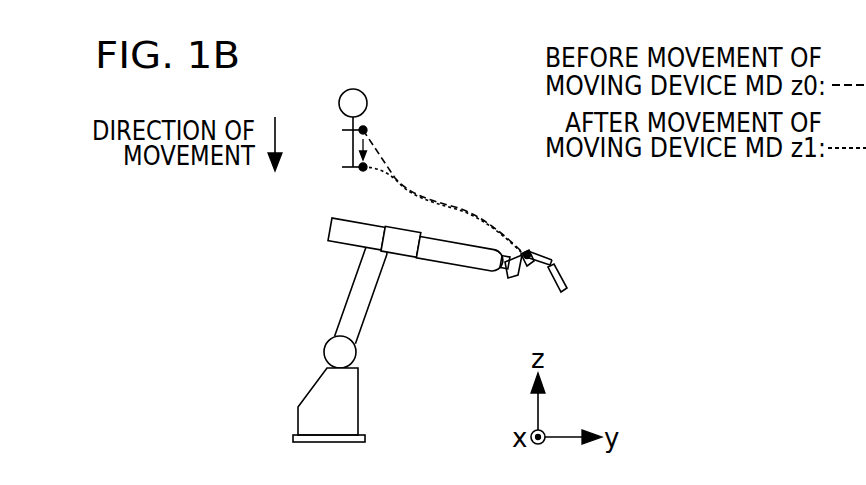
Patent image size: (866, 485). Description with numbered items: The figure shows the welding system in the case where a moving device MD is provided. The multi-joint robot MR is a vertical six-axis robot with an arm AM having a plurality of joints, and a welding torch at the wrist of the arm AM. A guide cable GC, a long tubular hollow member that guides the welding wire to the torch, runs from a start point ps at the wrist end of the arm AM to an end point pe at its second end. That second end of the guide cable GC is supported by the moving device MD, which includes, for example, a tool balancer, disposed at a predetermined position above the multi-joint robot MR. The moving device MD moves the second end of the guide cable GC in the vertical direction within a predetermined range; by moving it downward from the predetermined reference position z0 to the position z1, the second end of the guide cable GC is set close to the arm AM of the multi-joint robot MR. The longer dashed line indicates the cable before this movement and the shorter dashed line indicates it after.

The moving device MD is at (363, 94).
The end point pe is at (365, 130).
The reference position z0 is at (337, 125).
The position after movement z1 is at (338, 162).
The guide cable GC is at (466, 198).
The multi-joint robot MR is at (388, 320).
The arm AM is at (441, 262).
The start point ps is at (527, 254).